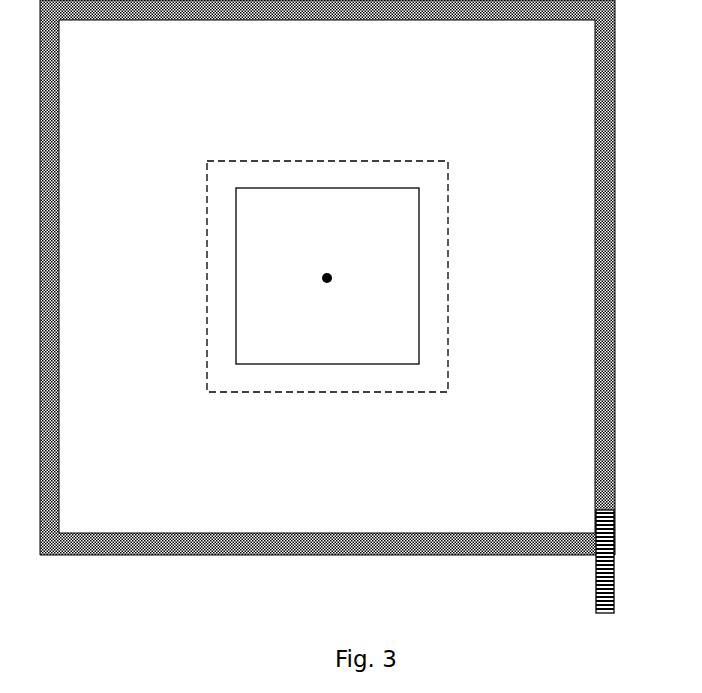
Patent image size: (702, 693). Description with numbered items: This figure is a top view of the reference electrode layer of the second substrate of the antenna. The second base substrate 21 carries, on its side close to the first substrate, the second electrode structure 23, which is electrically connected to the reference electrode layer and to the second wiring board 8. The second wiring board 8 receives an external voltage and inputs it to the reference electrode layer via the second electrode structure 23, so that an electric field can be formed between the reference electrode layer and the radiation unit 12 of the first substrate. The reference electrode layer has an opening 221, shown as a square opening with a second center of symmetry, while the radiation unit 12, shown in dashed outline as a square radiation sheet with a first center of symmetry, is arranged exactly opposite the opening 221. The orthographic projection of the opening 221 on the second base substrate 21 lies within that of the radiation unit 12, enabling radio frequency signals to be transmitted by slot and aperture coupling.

The second wiring board 8 is at (605, 598).
The radiation unit 12 is at (436, 161).
The second base substrate 21 is at (227, 512).
The second electrode structure 23 is at (355, 553).
The opening 221 is at (338, 188).